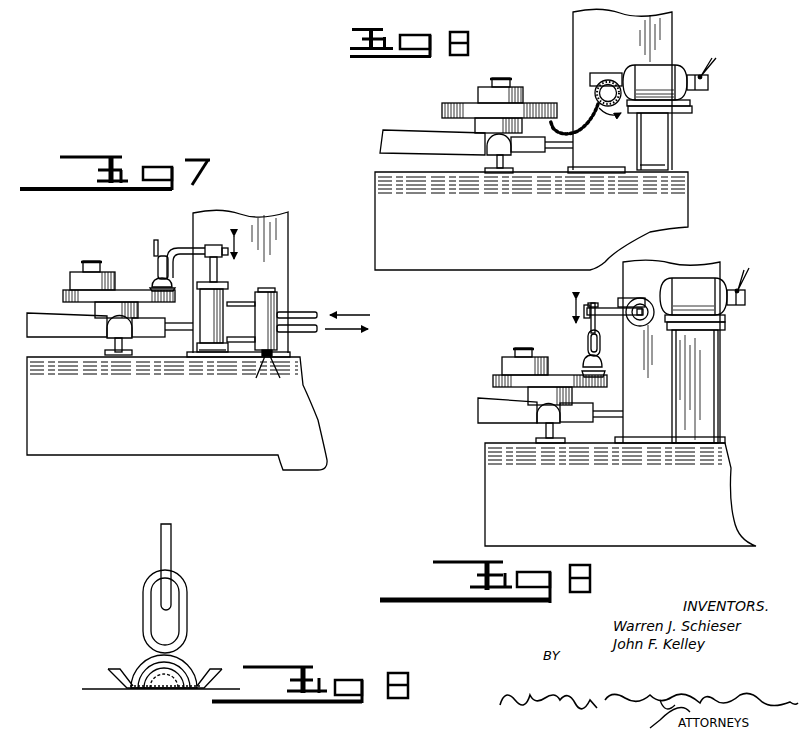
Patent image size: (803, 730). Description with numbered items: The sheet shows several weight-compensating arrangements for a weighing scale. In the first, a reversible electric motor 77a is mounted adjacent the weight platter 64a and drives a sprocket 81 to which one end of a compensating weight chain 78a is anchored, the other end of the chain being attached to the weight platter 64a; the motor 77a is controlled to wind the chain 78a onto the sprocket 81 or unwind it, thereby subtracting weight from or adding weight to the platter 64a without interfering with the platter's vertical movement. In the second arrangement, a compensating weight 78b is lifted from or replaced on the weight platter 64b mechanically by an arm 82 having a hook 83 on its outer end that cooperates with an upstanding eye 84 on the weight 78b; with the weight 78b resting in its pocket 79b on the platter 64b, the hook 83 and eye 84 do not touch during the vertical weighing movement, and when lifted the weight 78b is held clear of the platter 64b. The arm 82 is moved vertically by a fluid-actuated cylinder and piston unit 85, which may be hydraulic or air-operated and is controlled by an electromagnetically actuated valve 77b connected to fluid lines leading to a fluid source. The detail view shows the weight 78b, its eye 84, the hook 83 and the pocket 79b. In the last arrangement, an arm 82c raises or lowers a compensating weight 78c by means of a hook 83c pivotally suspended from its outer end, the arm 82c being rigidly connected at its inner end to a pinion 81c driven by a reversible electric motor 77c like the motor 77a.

In FIG. 6, the weight platter 64a is at (462, 106).
In FIG. 6, the sprocket 81 is at (608, 85).
In FIG. 6, the compensating weight chain 78a is at (575, 137).
In FIG. 6, the reversible electric motor 77a is at (673, 65).
In FIG. 7, the weight platter 64b is at (76, 290).
In FIG. 7, the arm 82 is at (190, 250).
In FIG. 7, the hook 83 is at (155, 240).
In FIG. 8, the hook 83 is at (170, 551).
In FIG. 7, the upstanding eye 84 is at (158, 262).
In FIG. 8, the upstanding eye 84 is at (186, 606).
In FIG. 7, the compensating weight 78b is at (160, 286).
In FIG. 8, the compensating weight 78b is at (187, 663).
In FIG. 7, the electromagnetically actuated valve 77b is at (278, 304).
In FIG. 7, the fluid-actuated cylinder and piston unit 85 is at (220, 353).
In FIG. 8, the pocket 79b is at (116, 672).
In FIG. 9, the pinion 81c is at (642, 297).
In FIG. 9, the reversible electric motor 77c is at (711, 284).
In FIG. 9, the arm 82c is at (592, 304).
In FIG. 9, the hook 83c is at (587, 331).
In FIG. 9, the compensating weight 78c is at (602, 363).